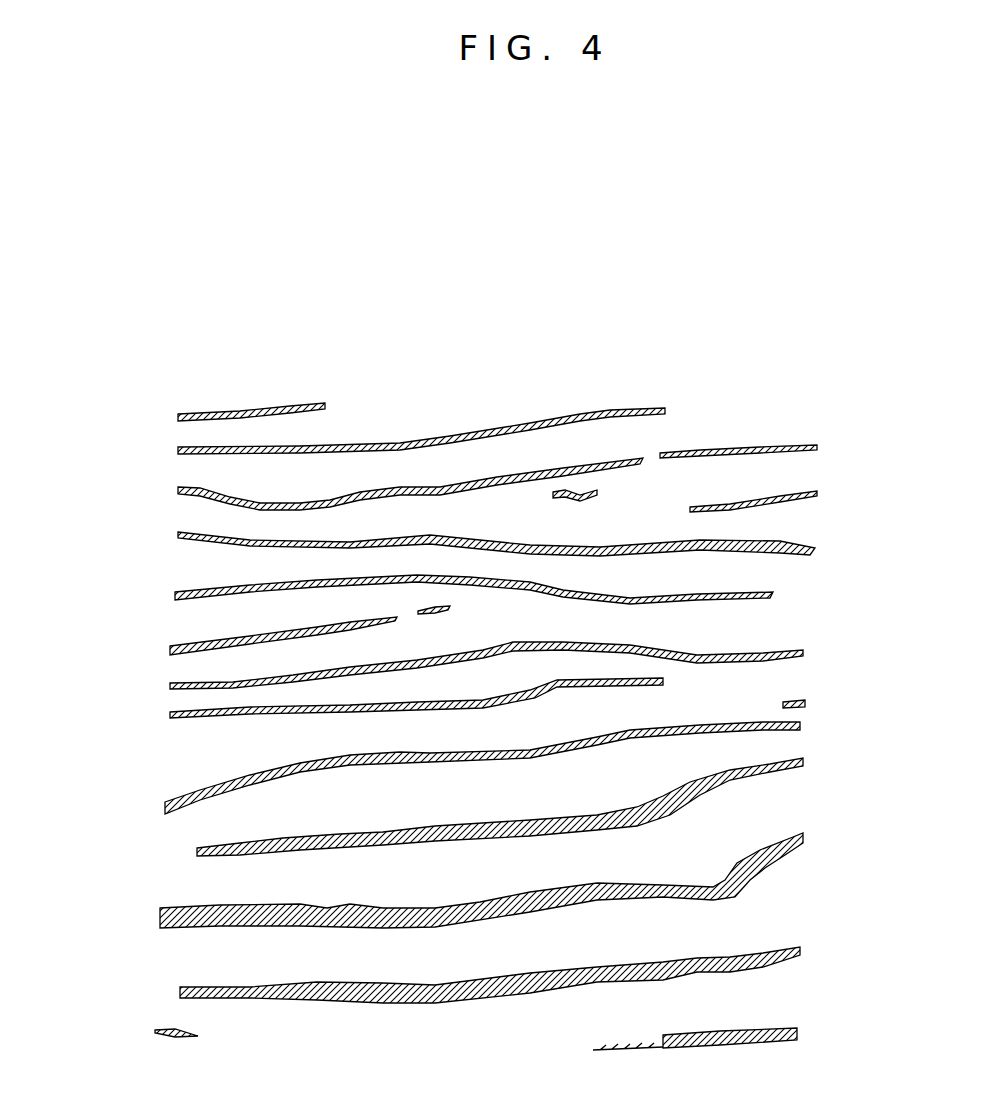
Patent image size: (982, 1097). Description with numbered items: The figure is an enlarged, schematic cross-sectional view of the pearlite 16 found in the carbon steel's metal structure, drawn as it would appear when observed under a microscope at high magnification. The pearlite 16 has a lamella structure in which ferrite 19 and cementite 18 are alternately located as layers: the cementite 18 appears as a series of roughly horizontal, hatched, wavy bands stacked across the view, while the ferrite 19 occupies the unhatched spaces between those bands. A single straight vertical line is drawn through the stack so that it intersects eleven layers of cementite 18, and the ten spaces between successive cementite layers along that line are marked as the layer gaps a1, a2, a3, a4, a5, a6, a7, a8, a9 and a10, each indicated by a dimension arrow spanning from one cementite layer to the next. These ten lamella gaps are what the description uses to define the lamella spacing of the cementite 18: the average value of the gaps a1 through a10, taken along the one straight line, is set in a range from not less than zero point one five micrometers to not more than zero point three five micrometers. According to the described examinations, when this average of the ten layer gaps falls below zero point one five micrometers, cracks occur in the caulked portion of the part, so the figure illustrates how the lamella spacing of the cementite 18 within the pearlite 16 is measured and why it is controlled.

The pearlite 16 is at (665, 403).
The cementite 18 is at (552, 490).
The ferrite 19 is at (385, 462).
The layer gap a1 is at (435, 487).
The layer gap a2 is at (435, 495).
The layer gap a3 is at (435, 540).
The layer gap a4 is at (435, 585).
The layer gap a5 is at (435, 613).
The layer gap a6 is at (435, 668).
The layer gap a7 is at (435, 712).
The layer gap a8 is at (435, 762).
The layer gap a9 is at (435, 841).
The layer gap a10 is at (435, 927).